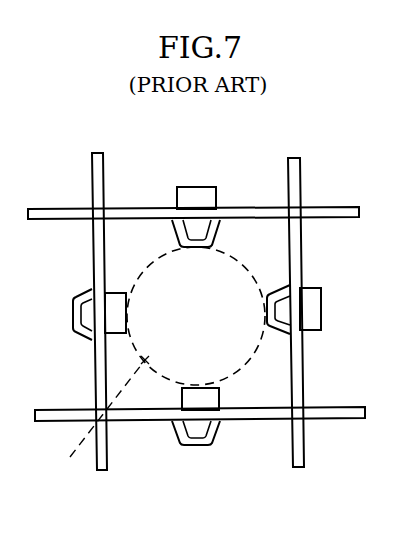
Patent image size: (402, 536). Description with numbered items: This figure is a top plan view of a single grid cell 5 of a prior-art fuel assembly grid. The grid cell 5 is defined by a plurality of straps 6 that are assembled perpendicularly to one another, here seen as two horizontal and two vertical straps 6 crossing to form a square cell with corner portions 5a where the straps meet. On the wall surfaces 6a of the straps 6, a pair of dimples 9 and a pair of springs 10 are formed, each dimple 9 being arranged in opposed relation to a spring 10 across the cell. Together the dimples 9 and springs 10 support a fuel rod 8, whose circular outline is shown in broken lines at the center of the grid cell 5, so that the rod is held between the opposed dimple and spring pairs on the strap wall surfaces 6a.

The grid cell 5 is at (138, 400).
The corner portion 5a is at (133, 228).
The strap 6 is at (300, 232).
The wall surface 6a is at (300, 289).
The fuel rod 8 is at (160, 362).
The dimple 9 is at (224, 232).
The spring 10 is at (199, 187).